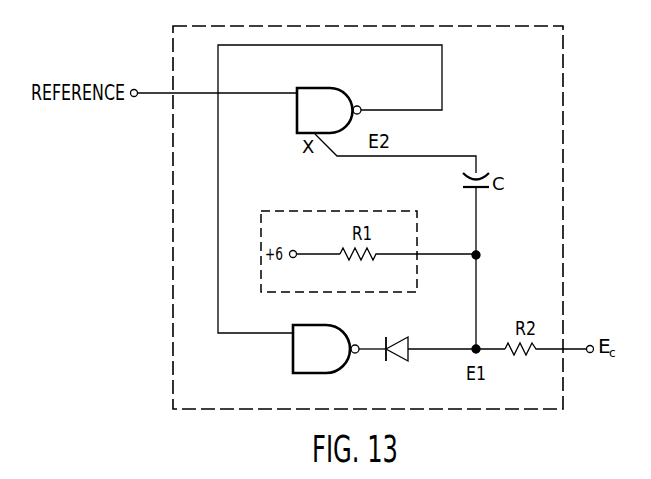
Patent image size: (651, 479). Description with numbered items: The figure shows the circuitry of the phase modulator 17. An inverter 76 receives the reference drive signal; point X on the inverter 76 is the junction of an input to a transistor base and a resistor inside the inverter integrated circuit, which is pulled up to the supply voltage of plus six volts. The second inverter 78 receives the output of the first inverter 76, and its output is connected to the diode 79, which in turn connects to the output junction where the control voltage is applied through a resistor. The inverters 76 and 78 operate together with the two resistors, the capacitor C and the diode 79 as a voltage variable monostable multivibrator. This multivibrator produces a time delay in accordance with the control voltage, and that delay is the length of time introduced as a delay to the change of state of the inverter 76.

The phase modulator 17 is at (503, 110).
The inverter 76 is at (341, 91).
The second inverter 78 is at (299, 358).
The diode 79 is at (399, 358).